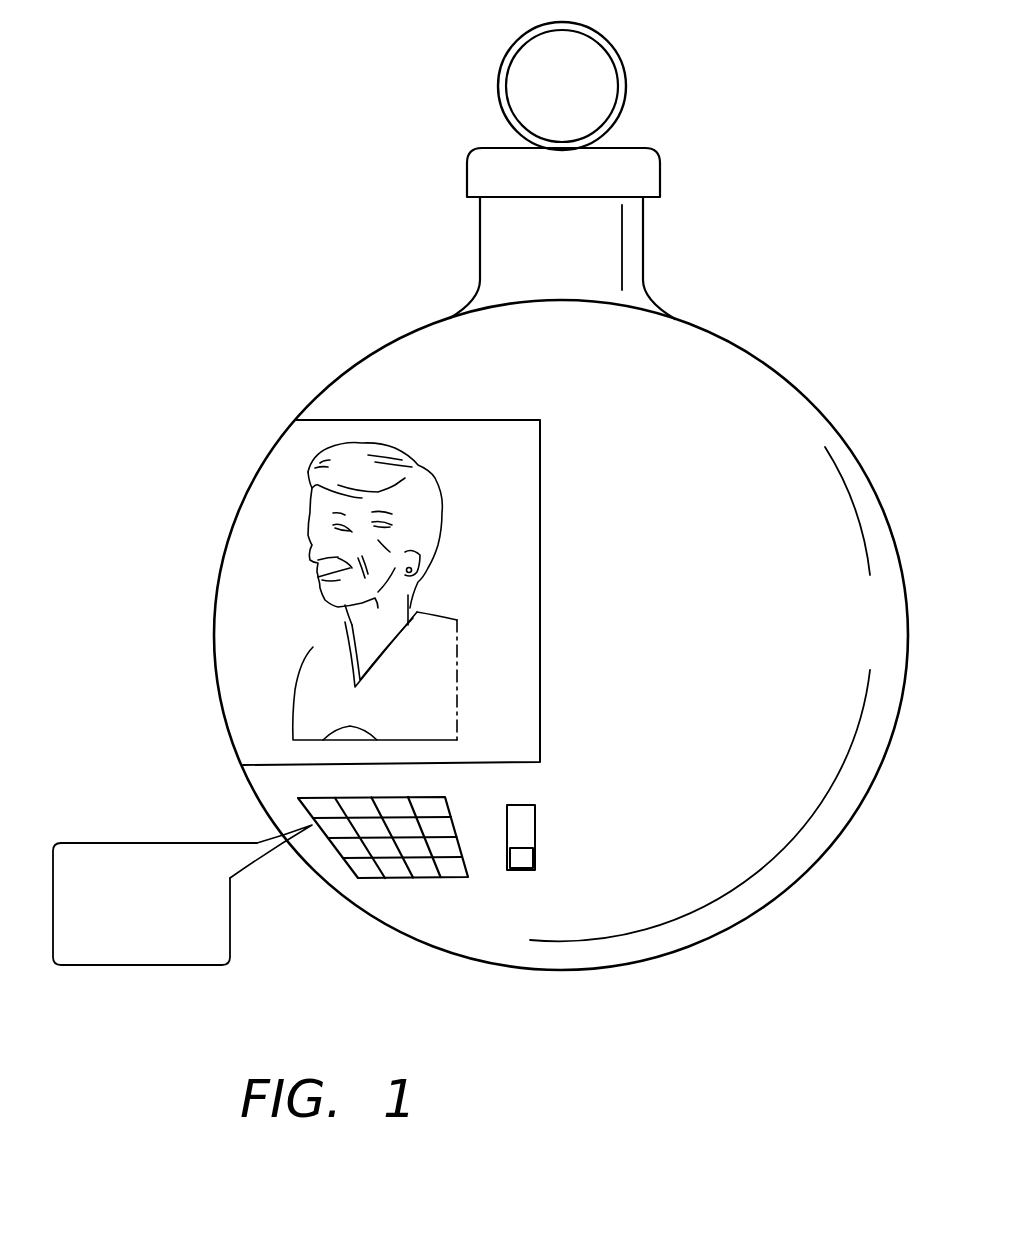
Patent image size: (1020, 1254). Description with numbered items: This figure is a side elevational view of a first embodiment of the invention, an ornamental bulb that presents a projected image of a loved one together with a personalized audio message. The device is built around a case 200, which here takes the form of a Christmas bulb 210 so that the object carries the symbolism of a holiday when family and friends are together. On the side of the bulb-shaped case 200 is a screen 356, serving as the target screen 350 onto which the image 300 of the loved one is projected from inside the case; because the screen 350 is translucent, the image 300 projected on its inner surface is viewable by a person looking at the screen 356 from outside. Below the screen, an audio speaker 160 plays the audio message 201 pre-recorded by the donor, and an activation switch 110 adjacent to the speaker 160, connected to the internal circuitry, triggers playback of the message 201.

The case 200 is at (561, 496).
The Christmas bulb 210 is at (733, 338).
The target screen 350 is at (540, 553).
The screen 356 is at (371, 591).
The image 300 is at (313, 647).
The audio speaker 160 is at (327, 845).
The activation switch 110 is at (505, 872).
The audio message 201 is at (168, 967).